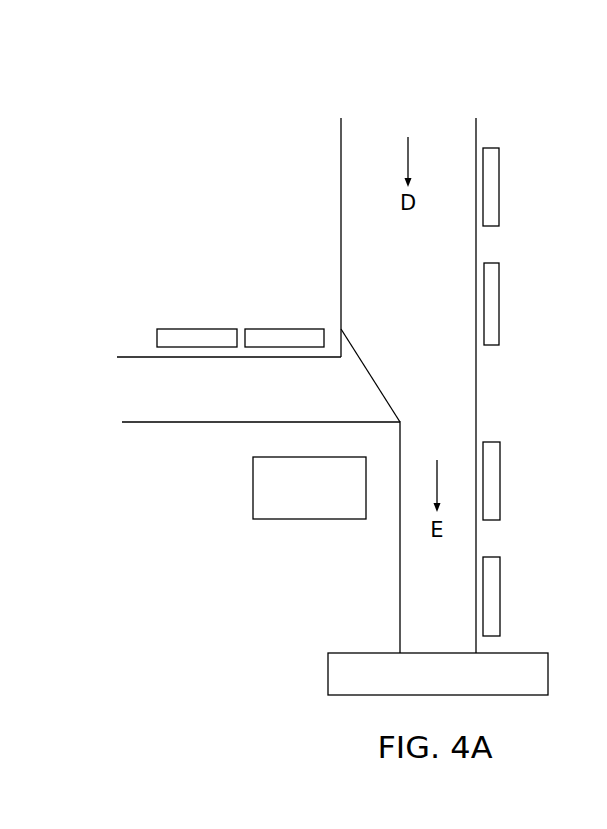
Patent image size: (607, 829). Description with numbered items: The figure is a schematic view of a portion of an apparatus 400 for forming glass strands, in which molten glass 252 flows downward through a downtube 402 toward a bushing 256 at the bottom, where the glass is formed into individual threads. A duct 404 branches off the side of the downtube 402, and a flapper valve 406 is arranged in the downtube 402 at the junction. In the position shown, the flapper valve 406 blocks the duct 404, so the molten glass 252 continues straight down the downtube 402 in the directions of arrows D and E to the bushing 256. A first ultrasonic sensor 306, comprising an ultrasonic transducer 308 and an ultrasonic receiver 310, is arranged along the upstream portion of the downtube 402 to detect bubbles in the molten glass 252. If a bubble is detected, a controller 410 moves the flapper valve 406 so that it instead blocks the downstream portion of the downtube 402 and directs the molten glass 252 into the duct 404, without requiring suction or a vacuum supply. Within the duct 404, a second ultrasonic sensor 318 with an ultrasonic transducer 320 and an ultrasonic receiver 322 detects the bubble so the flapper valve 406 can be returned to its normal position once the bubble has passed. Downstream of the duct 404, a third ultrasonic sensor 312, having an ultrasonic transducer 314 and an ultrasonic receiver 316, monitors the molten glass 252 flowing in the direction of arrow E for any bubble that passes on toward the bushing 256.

The molten glass 252 is at (370, 120).
The bushing 256 is at (328, 672).
The first ultrasonic sensor 306 is at (538, 246).
The ultrasonic transducer 308 is at (490, 194).
The ultrasonic receiver 310 is at (492, 304).
The third ultrasonic sensor 312 is at (536, 539).
The ultrasonic transducer 314 is at (492, 485).
The ultrasonic receiver 316 is at (492, 592).
The second ultrasonic sensor 318 is at (245, 300).
The ultrasonic transducer 320 is at (183, 329).
The ultrasonic receiver 322 is at (291, 329).
The apparatus 400 is at (473, 91).
The downtube 402 is at (341, 200).
The duct 404 is at (184, 422).
The flapper valve 406 is at (358, 356).
The controller 410 is at (320, 510).